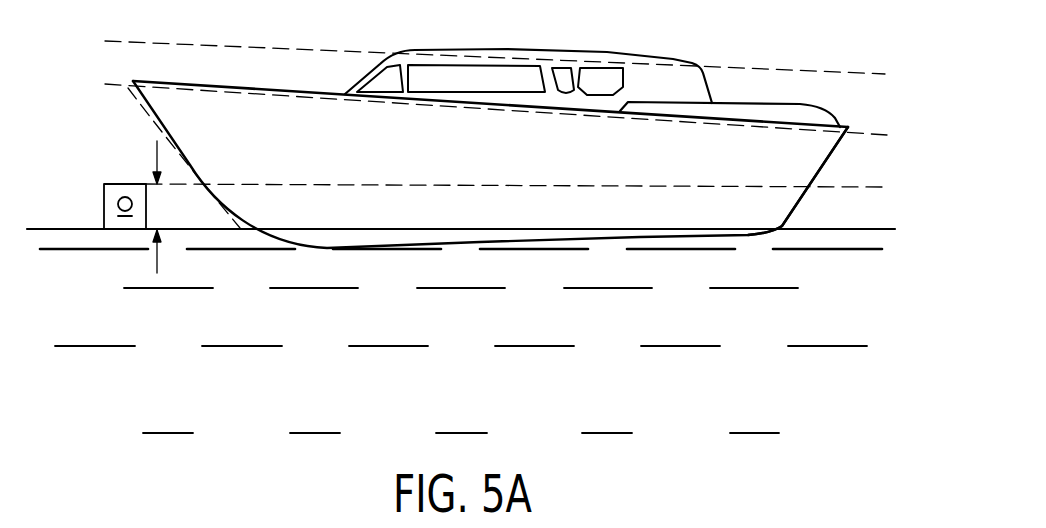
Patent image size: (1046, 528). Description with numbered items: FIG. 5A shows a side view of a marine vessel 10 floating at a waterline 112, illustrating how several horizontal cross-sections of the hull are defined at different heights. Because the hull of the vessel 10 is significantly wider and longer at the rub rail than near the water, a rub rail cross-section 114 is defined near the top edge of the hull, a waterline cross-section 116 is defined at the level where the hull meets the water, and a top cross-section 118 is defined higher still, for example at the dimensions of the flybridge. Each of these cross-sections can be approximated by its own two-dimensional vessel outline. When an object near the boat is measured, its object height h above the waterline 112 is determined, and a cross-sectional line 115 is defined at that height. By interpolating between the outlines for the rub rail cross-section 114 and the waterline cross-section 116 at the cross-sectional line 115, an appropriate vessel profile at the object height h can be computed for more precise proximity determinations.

The marine vessel 10 is at (502, 53).
The waterline 112 is at (834, 229).
The rub rail cross-section 114 is at (123, 89).
The cross-sectional line 115 is at (171, 176).
The waterline cross-section 116 is at (75, 229).
The top cross-section 118 is at (174, 42).
The object height h is at (157, 258).